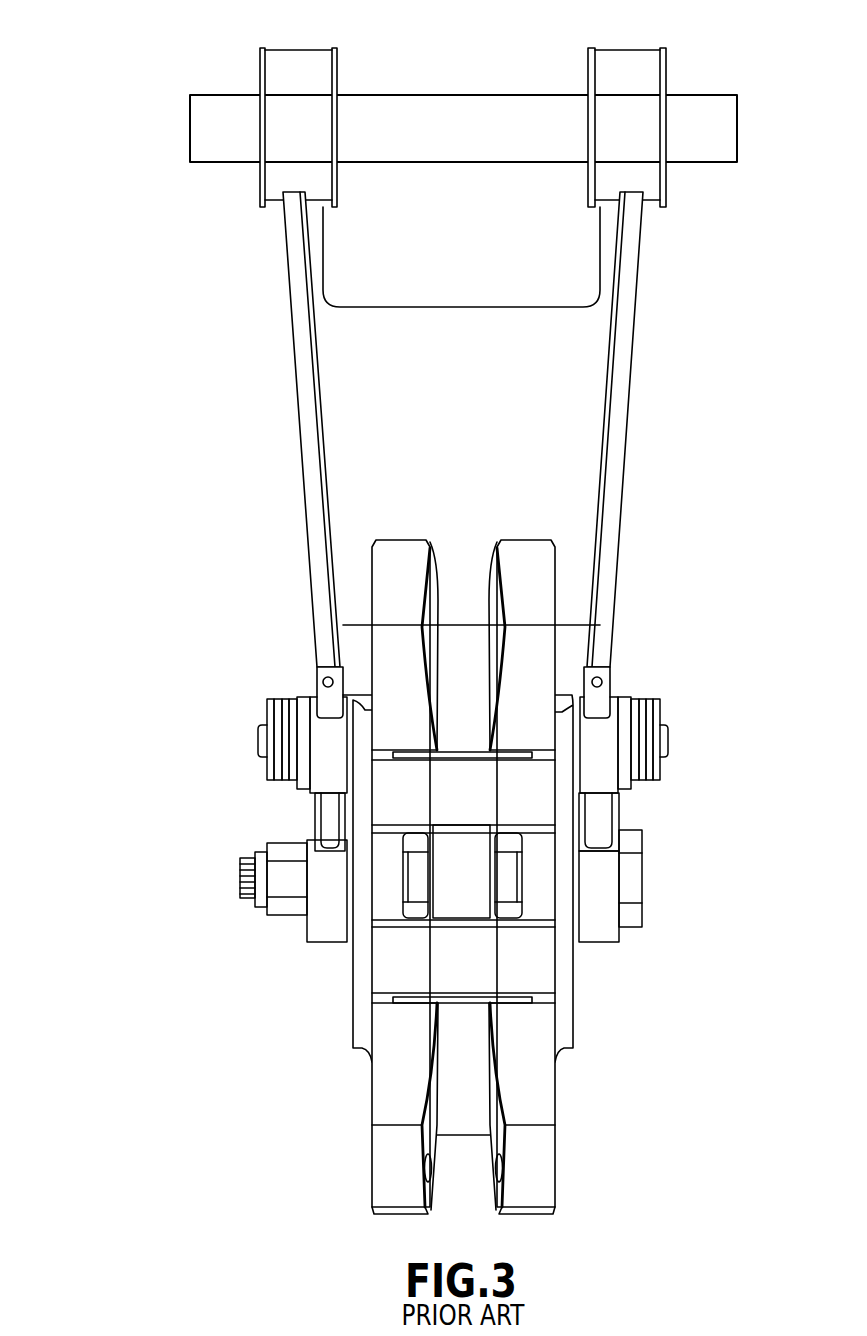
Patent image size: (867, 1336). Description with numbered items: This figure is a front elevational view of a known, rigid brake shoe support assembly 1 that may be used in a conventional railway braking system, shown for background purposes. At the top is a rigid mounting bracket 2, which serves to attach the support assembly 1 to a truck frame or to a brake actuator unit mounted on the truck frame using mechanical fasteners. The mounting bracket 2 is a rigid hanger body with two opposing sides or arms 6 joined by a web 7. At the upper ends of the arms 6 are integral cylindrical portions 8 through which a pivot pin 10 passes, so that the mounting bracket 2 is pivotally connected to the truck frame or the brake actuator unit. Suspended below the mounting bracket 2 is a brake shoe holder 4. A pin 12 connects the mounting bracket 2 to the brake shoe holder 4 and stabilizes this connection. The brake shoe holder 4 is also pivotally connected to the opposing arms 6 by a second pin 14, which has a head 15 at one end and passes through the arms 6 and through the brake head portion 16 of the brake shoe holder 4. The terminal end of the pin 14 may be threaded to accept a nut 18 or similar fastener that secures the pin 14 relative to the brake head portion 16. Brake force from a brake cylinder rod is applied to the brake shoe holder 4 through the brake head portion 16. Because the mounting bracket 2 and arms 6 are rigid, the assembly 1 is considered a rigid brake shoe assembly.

The brake shoe support assembly 1 is at (145, 398).
The mounting bracket 2 is at (632, 414).
The brake shoe holder 4 is at (555, 1105).
The arms 6 is at (320, 565).
The web 7 is at (343, 500).
The cylindrical portions 8 is at (298, 52).
The pivot pin 10 is at (702, 163).
The pin 12 is at (670, 740).
The second pin 14 is at (238, 875).
The head 15 is at (642, 915).
The brake head portion 16 is at (465, 905).
The nut 18 is at (278, 898).